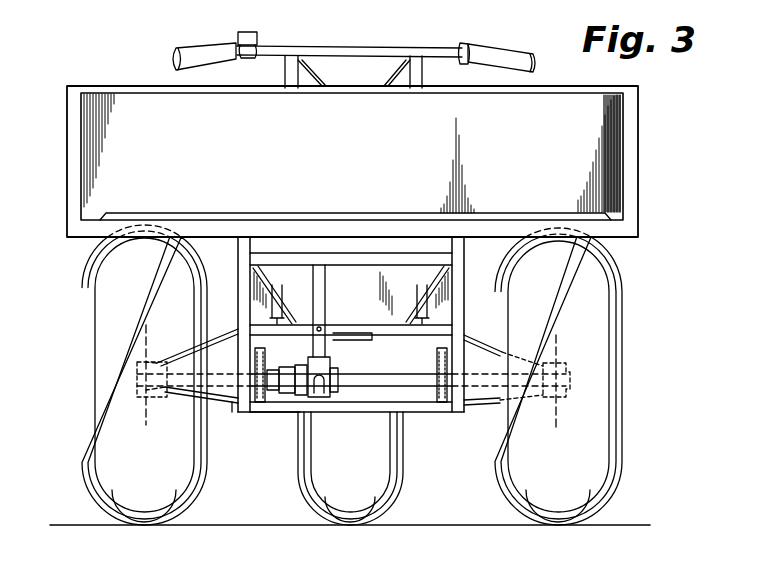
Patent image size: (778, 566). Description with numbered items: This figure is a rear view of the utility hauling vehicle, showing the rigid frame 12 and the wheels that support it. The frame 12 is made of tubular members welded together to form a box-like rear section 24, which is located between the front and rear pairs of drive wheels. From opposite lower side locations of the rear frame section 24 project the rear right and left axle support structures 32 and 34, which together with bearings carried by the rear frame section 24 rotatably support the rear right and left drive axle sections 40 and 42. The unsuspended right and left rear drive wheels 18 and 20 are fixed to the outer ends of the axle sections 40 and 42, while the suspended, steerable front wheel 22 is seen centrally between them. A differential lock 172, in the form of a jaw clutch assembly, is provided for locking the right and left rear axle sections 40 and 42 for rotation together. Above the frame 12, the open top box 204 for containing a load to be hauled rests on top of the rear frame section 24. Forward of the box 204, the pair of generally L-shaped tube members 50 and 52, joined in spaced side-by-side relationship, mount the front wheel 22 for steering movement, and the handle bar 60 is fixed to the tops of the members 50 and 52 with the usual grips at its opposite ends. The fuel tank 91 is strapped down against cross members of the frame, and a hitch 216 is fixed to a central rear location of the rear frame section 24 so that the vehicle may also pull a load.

The rigid frame 12 is at (278, 452).
The right rear drive wheel 18 is at (497, 484).
The left rear drive wheel 20 is at (207, 482).
The steerable front wheel 22 is at (403, 447).
The box-like rear section 24 is at (238, 257).
The rear right axle support structure 32 is at (482, 340).
The rear left axle support structure 34 is at (222, 333).
The rear right drive axle section 40 is at (482, 372).
The rear left drive axle section 42 is at (230, 400).
The L-shaped tube member 50 is at (423, 79).
The L-shaped tube member 52 is at (285, 72).
The handle bar 60 is at (440, 47).
The fuel tank 91 is at (356, 278).
The differential lock 172 is at (342, 363).
The open top box 204 is at (368, 152).
The hitch 216 is at (352, 343).